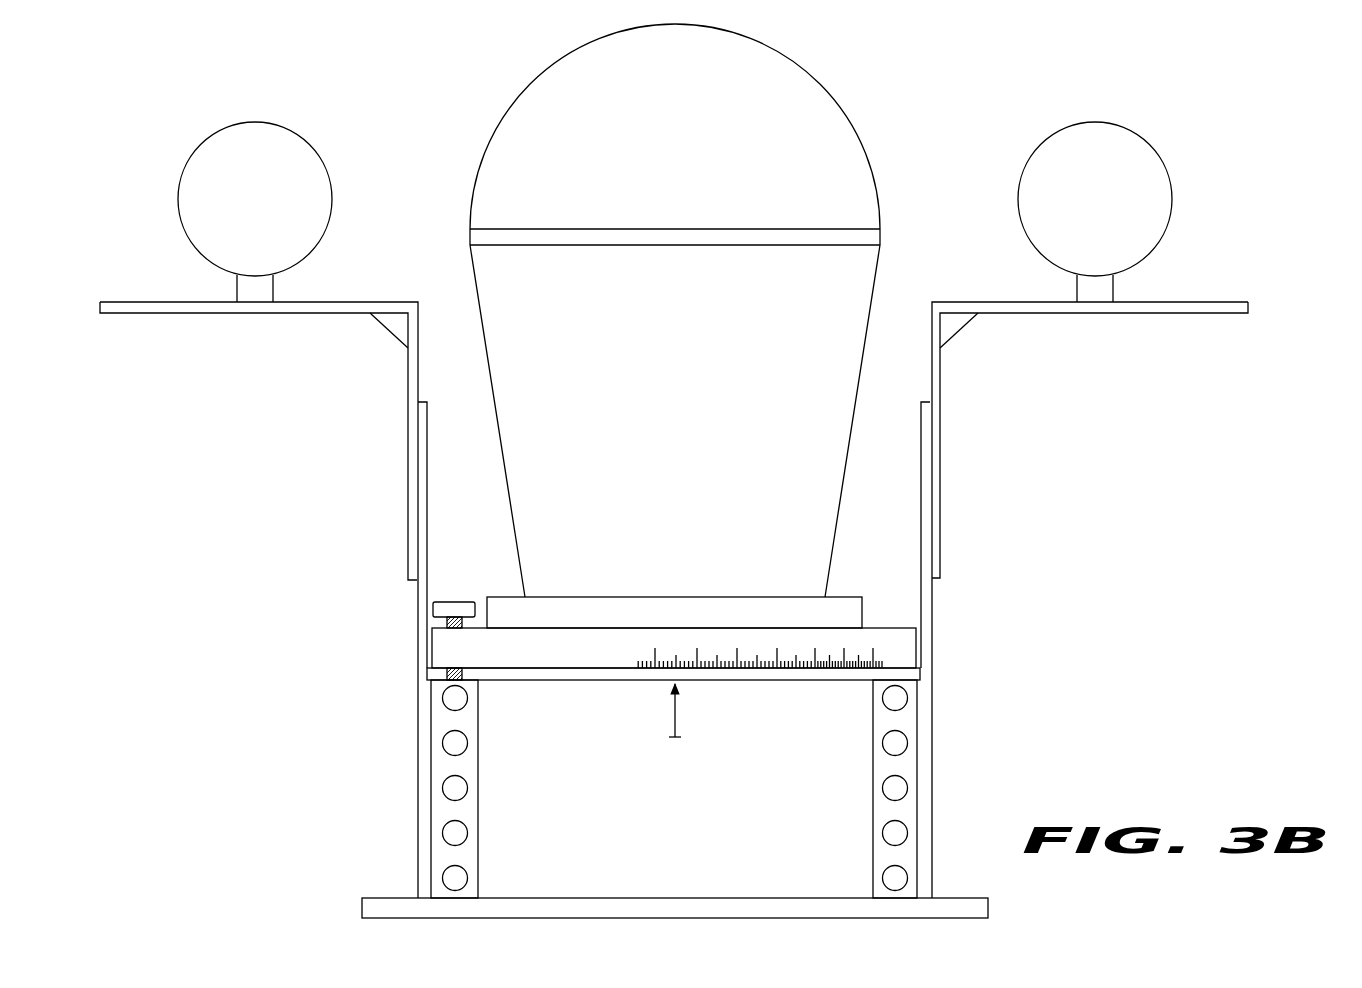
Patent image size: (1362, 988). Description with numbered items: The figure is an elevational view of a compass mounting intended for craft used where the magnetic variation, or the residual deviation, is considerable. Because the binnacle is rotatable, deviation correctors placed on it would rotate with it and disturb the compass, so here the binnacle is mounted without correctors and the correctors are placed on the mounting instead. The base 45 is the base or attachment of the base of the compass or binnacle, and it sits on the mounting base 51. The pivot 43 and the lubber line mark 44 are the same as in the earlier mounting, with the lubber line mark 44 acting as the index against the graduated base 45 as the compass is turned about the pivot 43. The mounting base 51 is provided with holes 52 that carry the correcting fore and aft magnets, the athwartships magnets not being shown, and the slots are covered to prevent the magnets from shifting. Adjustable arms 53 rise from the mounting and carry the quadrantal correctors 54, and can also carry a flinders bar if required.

The pivot 43 is at (654, 676).
The lubber line mark 44 is at (682, 718).
The base 45 is at (897, 625).
The mounting base 51 is at (692, 827).
The holes 52 is at (906, 814).
The arms 53 is at (406, 533).
The quadrantal correctors 54 is at (1112, 208).